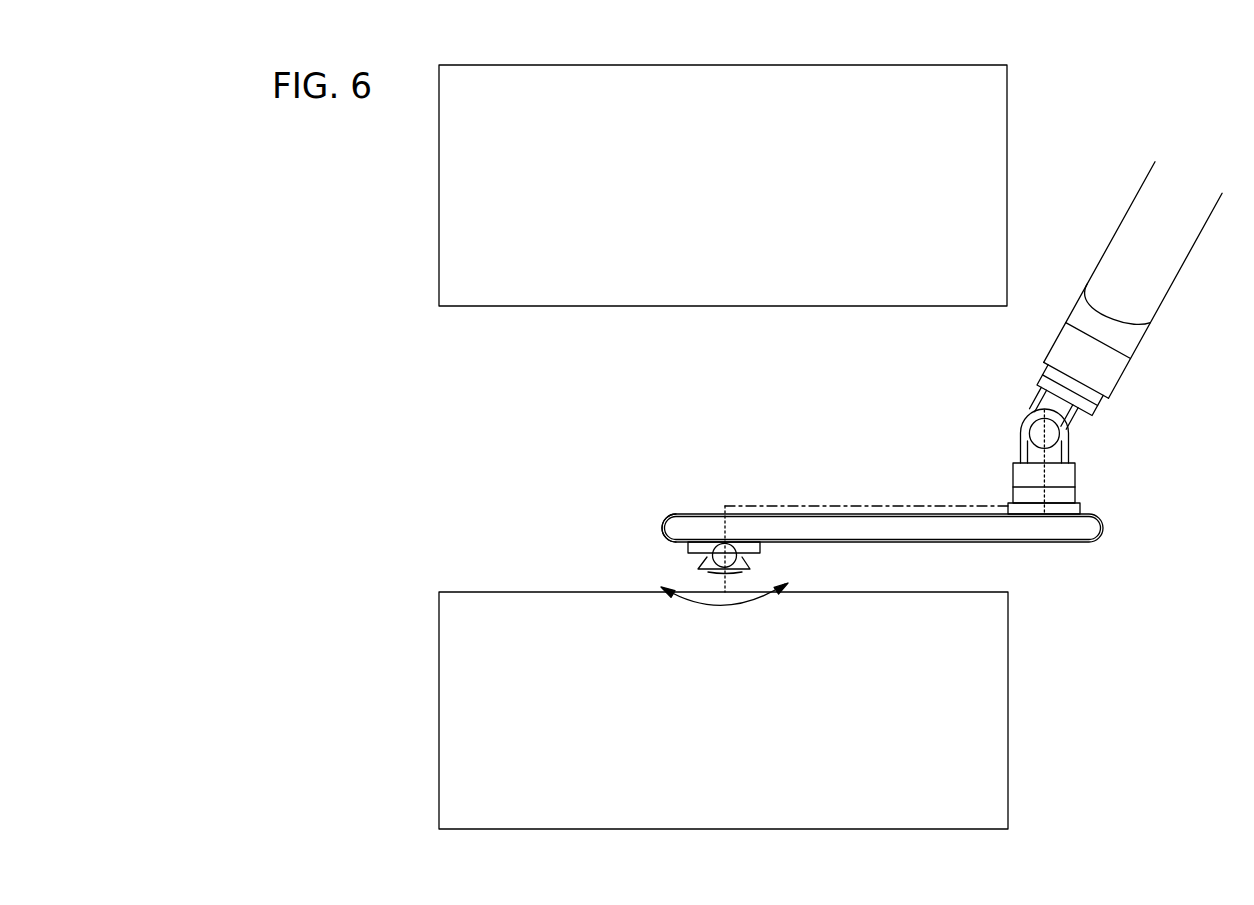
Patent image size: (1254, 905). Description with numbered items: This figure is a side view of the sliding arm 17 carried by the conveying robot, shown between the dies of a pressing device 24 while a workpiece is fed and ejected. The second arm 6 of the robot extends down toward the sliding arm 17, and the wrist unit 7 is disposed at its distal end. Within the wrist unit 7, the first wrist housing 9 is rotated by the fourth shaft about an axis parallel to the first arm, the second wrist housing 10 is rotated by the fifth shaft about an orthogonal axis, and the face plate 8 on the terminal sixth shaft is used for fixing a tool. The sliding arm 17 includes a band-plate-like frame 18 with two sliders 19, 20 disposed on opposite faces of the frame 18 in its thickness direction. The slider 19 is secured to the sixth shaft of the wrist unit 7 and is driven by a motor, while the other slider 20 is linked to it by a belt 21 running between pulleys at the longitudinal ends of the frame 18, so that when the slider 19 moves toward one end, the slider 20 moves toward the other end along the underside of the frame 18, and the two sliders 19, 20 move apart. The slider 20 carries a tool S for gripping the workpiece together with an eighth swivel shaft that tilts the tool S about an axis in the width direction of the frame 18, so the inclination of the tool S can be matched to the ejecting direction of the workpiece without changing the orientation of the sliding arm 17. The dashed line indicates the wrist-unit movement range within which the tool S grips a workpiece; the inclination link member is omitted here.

The second arm 6 is at (1181, 272).
The wrist unit 7 is at (1044, 426).
The face plate 8 is at (1076, 493).
The first wrist housing 9 is at (1040, 380).
The second wrist housing 10 is at (1018, 443).
The sliding arm 17 is at (884, 505).
The frame 18 is at (693, 513).
The slider 19 is at (1082, 508).
The slider 20 is at (688, 548).
The belt 21 is at (662, 525).
The pressing device 24 is at (430, 187).
The tool S is at (697, 568).